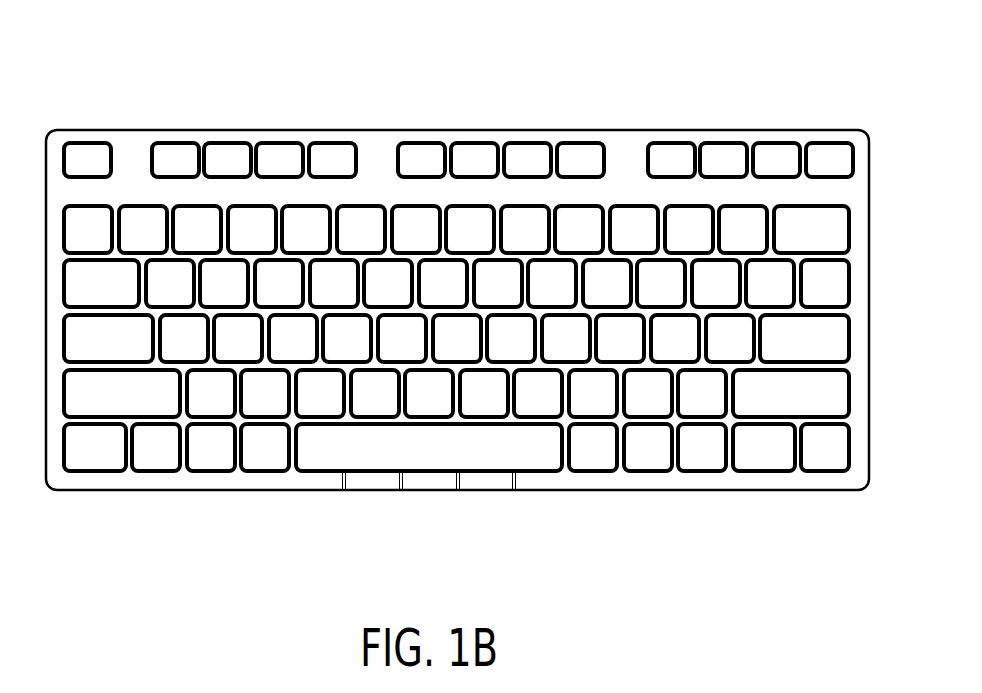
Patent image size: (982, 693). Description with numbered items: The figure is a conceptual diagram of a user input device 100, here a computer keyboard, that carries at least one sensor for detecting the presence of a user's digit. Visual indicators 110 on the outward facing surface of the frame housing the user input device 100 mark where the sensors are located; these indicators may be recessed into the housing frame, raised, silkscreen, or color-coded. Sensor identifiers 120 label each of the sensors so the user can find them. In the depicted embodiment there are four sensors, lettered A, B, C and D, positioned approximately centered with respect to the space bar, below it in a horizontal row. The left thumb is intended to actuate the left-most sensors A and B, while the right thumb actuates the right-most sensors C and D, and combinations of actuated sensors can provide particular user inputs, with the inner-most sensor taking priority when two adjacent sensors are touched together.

The user input device 100 is at (139, 130).
The visual indicators 110 is at (447, 532).
The sensor identifiers 120 is at (410, 532).